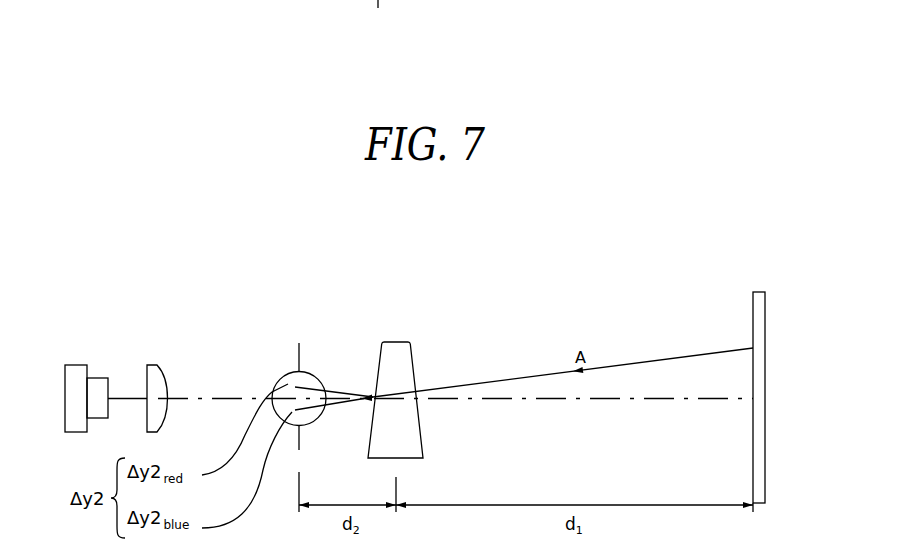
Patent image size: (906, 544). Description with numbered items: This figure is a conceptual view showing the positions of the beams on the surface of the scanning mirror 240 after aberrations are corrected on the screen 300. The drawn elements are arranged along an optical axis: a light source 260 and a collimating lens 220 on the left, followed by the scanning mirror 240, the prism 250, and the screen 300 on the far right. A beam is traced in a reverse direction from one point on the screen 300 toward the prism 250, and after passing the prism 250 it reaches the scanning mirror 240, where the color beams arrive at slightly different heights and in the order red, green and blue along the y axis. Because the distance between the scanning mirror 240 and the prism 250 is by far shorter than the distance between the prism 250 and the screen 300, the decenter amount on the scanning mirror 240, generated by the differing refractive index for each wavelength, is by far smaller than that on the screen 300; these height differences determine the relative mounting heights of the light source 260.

The light source 260 is at (73, 372).
The collimating lens 220 is at (155, 370).
The scanning mirror 240 is at (290, 378).
The prism 250 is at (398, 347).
The screen 300 is at (758, 298).